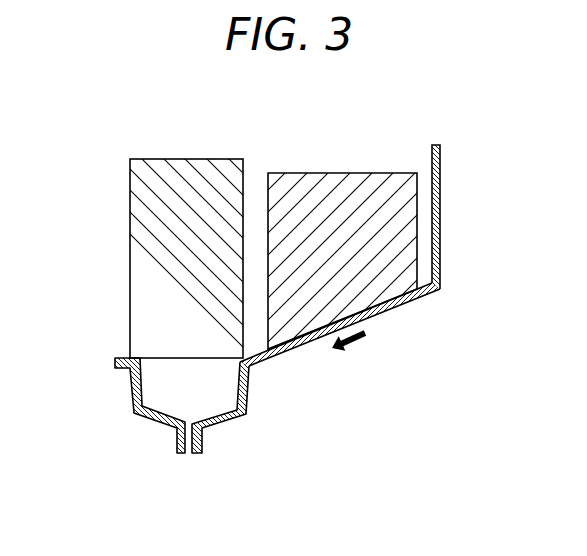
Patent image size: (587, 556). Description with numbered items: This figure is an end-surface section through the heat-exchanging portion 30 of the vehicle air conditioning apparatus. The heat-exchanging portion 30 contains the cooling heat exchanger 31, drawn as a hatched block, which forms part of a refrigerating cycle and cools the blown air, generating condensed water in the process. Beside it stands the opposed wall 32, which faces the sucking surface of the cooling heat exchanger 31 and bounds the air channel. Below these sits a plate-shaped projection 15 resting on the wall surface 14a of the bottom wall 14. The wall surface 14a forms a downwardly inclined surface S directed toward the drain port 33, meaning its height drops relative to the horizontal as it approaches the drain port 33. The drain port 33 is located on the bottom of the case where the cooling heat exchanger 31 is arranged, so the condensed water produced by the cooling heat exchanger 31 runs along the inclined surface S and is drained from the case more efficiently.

The bottom wall 14 is at (373, 318).
The wall surface 14a is at (333, 318).
The plate-shaped projection 15 is at (355, 173).
The heat-exchanging portion 30 is at (330, 340).
The cooling heat exchanger 31 is at (130, 263).
The opposed wall 32 is at (441, 222).
The drain port 33 is at (192, 455).
The downwardly inclined surface S is at (352, 348).